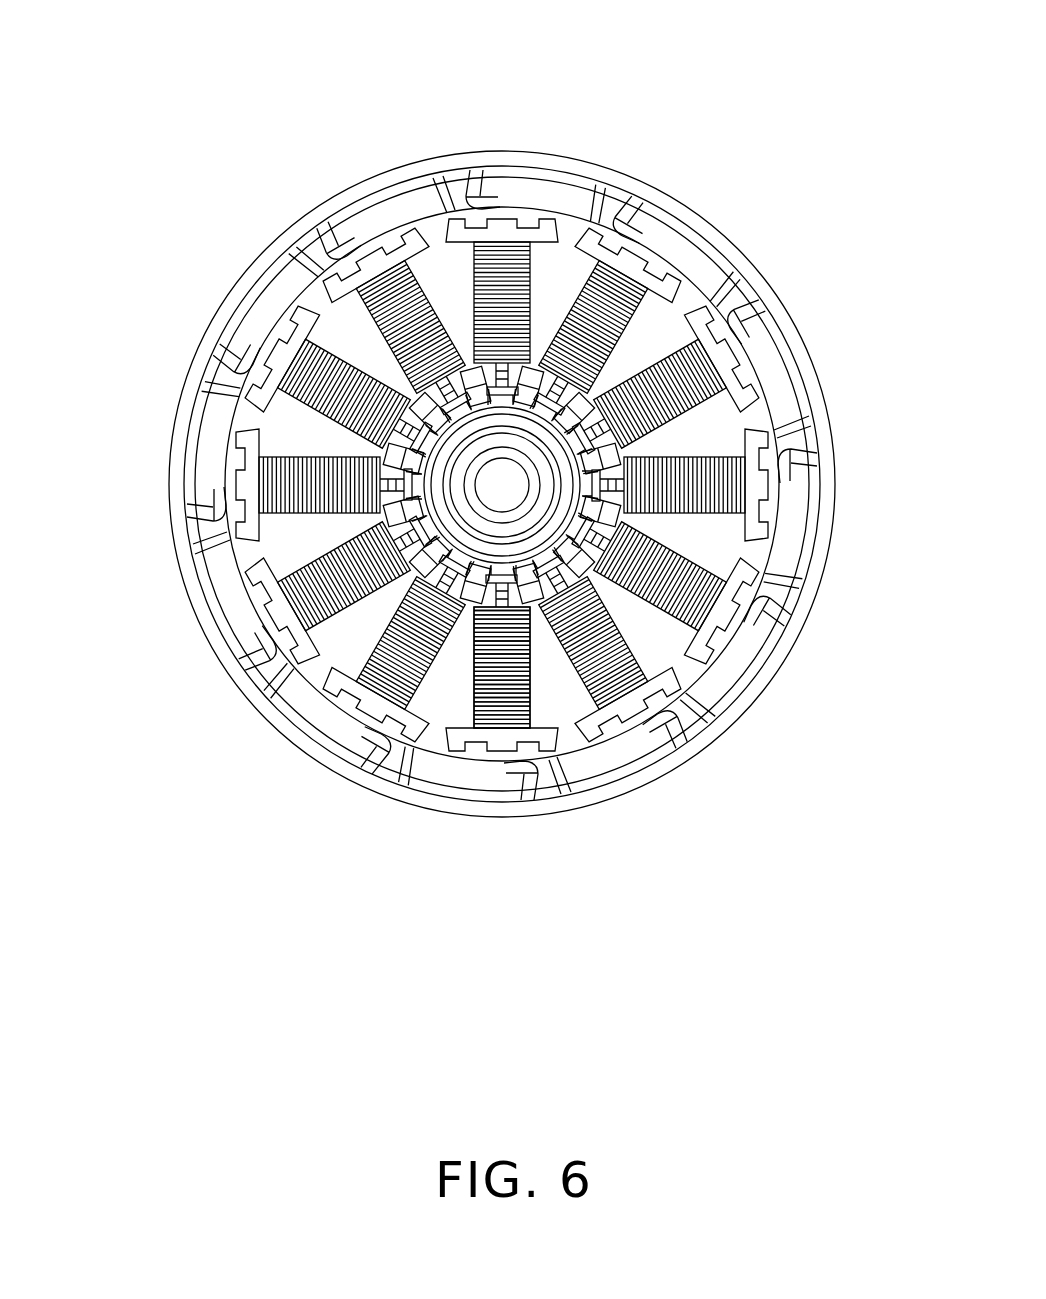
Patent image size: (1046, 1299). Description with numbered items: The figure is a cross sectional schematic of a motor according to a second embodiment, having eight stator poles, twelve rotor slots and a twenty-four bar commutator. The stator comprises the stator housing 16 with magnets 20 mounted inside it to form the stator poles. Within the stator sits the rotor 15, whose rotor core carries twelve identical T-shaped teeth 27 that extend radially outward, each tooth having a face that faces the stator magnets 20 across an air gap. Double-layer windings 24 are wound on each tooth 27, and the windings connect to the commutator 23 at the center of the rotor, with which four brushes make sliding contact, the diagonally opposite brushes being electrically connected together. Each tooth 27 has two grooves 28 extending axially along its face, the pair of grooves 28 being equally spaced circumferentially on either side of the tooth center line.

The rotor 15 is at (265, 395).
The stator housing 16 is at (355, 775).
The magnets 20 is at (345, 237).
The commutator 23 is at (472, 603).
The double-layer windings 24 is at (518, 685).
The T-shaped teeth 27 is at (627, 705).
The grooves 28 is at (290, 640).